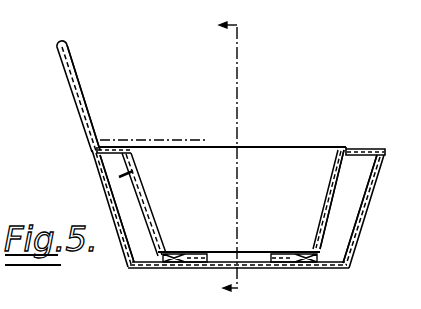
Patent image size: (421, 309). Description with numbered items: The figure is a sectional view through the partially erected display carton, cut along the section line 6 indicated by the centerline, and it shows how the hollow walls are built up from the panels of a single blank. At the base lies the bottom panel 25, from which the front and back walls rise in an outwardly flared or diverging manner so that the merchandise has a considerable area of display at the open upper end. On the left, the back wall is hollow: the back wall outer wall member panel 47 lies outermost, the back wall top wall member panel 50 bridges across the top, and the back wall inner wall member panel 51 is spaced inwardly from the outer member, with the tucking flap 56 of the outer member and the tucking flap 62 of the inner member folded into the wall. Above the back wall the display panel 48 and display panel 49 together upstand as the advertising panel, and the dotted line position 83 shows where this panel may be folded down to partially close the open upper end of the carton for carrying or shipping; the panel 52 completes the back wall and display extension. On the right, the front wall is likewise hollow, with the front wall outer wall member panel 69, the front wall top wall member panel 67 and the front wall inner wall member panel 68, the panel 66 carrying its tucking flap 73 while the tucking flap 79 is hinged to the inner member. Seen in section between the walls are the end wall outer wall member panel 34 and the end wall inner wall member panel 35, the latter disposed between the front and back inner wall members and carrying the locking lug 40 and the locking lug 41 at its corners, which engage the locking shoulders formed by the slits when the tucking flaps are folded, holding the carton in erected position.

The section line 6- 6 is at (237, 158).
The bottom panel 25 is at (263, 270).
The end wall outer wall member panel 34 is at (213, 269).
The end wall inner wall member panel 35 is at (295, 148).
The locking lug 40 is at (147, 229).
The locking lug 41 is at (353, 216).
The back wall outer wall member panel 47 is at (106, 198).
The display panel 48 is at (75, 102).
The display panel 49 is at (81, 90).
The back wall top wall member panel 50 is at (120, 147).
The back wall inner wall member panel 51 is at (150, 205).
The panel 52 is at (198, 253).
The tucking flap 56 is at (124, 175).
The tucking flap 62 is at (172, 253).
The panel 66 is at (365, 218).
The front wall top wall member panel 67 is at (372, 149).
The front wall inner wall member panel 68 is at (331, 202).
The front wall outer wall member panel 69 is at (290, 253).
The tucking flap 73 is at (357, 182).
The tucking flap 79 is at (318, 268).
The dotted line position 83 is at (187, 139).